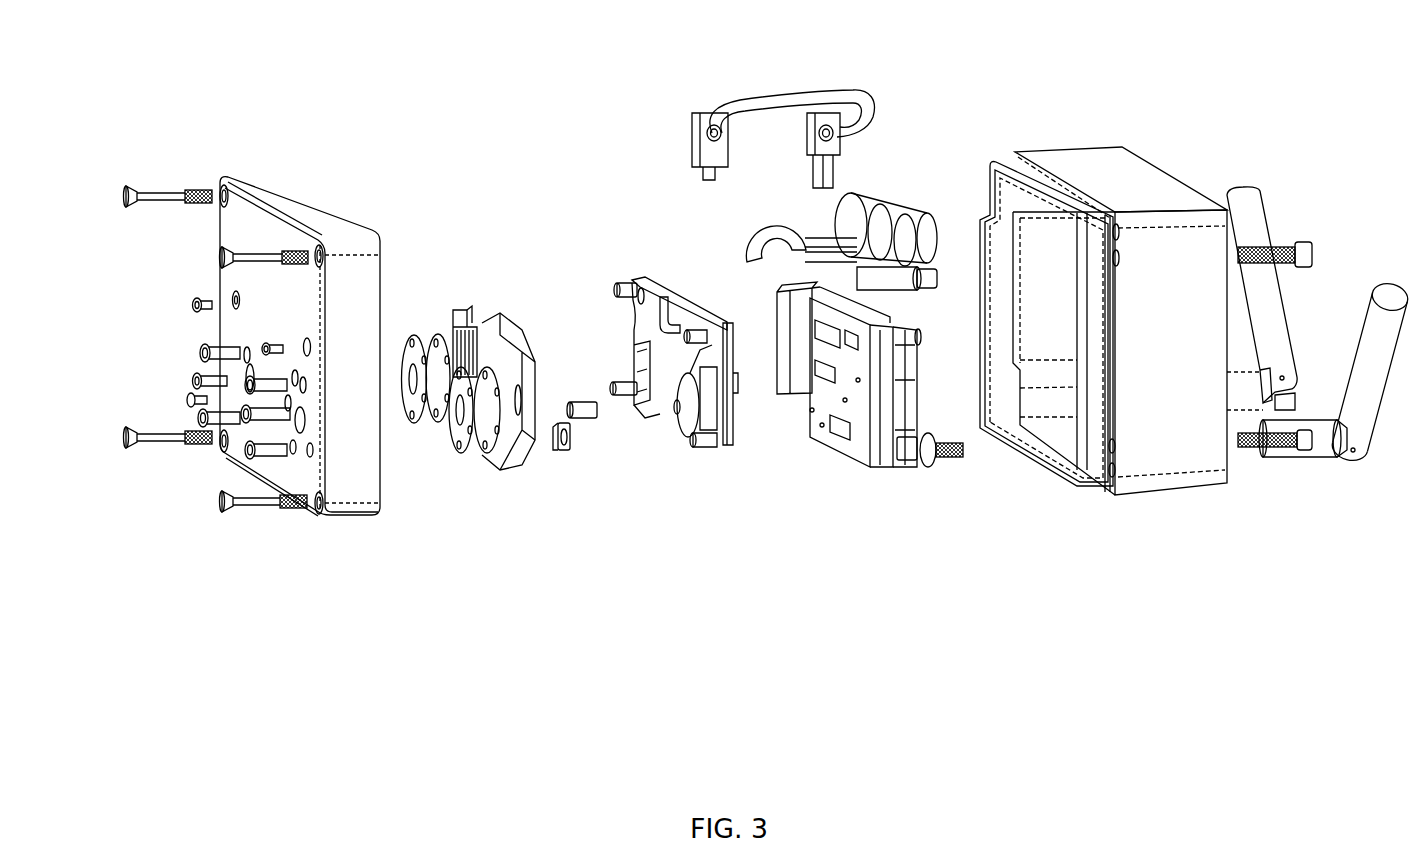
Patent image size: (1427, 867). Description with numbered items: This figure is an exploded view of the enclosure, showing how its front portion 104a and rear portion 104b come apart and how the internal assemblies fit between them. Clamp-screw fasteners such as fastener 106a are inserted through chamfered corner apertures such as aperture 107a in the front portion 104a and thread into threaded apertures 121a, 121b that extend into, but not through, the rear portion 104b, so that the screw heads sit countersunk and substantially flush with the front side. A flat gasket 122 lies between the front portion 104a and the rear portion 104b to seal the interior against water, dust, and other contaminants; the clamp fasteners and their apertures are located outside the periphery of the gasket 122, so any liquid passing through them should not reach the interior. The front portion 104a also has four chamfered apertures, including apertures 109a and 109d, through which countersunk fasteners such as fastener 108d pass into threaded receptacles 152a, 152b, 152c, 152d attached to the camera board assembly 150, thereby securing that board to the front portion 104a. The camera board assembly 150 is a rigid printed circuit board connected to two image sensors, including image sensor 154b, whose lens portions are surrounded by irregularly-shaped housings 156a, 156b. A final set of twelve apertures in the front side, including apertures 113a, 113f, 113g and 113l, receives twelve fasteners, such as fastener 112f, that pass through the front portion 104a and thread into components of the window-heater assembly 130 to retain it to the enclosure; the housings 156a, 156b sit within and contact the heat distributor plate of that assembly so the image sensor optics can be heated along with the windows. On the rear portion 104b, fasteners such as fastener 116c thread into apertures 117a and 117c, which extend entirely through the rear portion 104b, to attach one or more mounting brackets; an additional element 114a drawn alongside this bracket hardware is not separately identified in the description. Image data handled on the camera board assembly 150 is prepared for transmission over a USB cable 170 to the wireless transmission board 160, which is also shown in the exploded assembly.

The front portion 104a is at (270, 176).
The rear portion 104b is at (1072, 147).
The fastener 106a is at (263, 252).
The aperture 107a is at (318, 230).
The fastener 108d is at (193, 304).
The aperture 109a is at (307, 342).
The aperture 109d is at (232, 300).
The fastener 112f is at (197, 352).
The aperture 113a is at (246, 347).
The aperture 113f is at (200, 343).
The aperture 113g is at (303, 392).
The aperture 113l is at (295, 372).
The antenna assembly 114a is at (1317, 445).
The fastener 116c is at (1243, 447).
The aperture 117a is at (1119, 256).
The aperture 117c is at (1107, 449).
The threaded aperture 121a is at (1116, 214).
The threaded aperture 121b is at (1106, 464).
The gasket 122 is at (997, 163).
The window-heater assembly 130 is at (497, 583).
The camera board assembly 150 is at (733, 487).
The threaded receptacle 152a is at (690, 300).
The threaded receptacle 152b is at (690, 440).
The threaded receptacle 152c is at (612, 385).
The threaded receptacle 152d is at (628, 278).
The image sensor 154b is at (720, 407).
The housing 156a is at (632, 372).
The housing 156b is at (673, 382).
The wireless transmission board 160 is at (913, 512).
The USB cable 170 is at (700, 138).